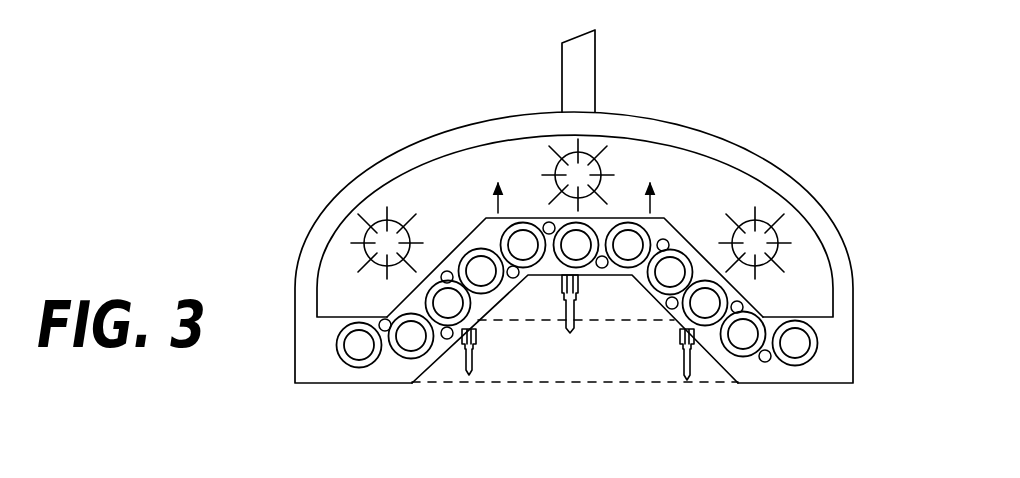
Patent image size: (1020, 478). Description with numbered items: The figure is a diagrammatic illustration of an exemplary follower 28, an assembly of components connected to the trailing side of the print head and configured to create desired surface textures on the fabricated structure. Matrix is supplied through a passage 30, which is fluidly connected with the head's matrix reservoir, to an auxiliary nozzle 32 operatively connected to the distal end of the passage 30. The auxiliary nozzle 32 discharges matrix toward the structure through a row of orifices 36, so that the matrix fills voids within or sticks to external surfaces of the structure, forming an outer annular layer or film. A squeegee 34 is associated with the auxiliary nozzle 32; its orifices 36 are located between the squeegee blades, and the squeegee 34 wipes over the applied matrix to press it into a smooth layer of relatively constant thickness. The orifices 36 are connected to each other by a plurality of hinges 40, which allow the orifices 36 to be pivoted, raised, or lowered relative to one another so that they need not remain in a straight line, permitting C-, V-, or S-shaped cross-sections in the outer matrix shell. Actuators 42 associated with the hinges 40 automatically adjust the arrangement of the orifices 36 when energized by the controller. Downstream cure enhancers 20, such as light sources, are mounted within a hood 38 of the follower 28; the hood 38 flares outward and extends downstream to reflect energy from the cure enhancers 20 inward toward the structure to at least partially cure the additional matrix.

The cure enhancer 20 is at (390, 236).
The follower 28 is at (214, 170).
The passage 30 is at (583, 58).
The auxiliary nozzle 32 is at (575, 398).
The squeegee 34 is at (422, 384).
The orifice 36 is at (473, 356).
The hood 38 is at (832, 238).
The hinge 40 is at (363, 367).
The actuator 42 is at (498, 190).